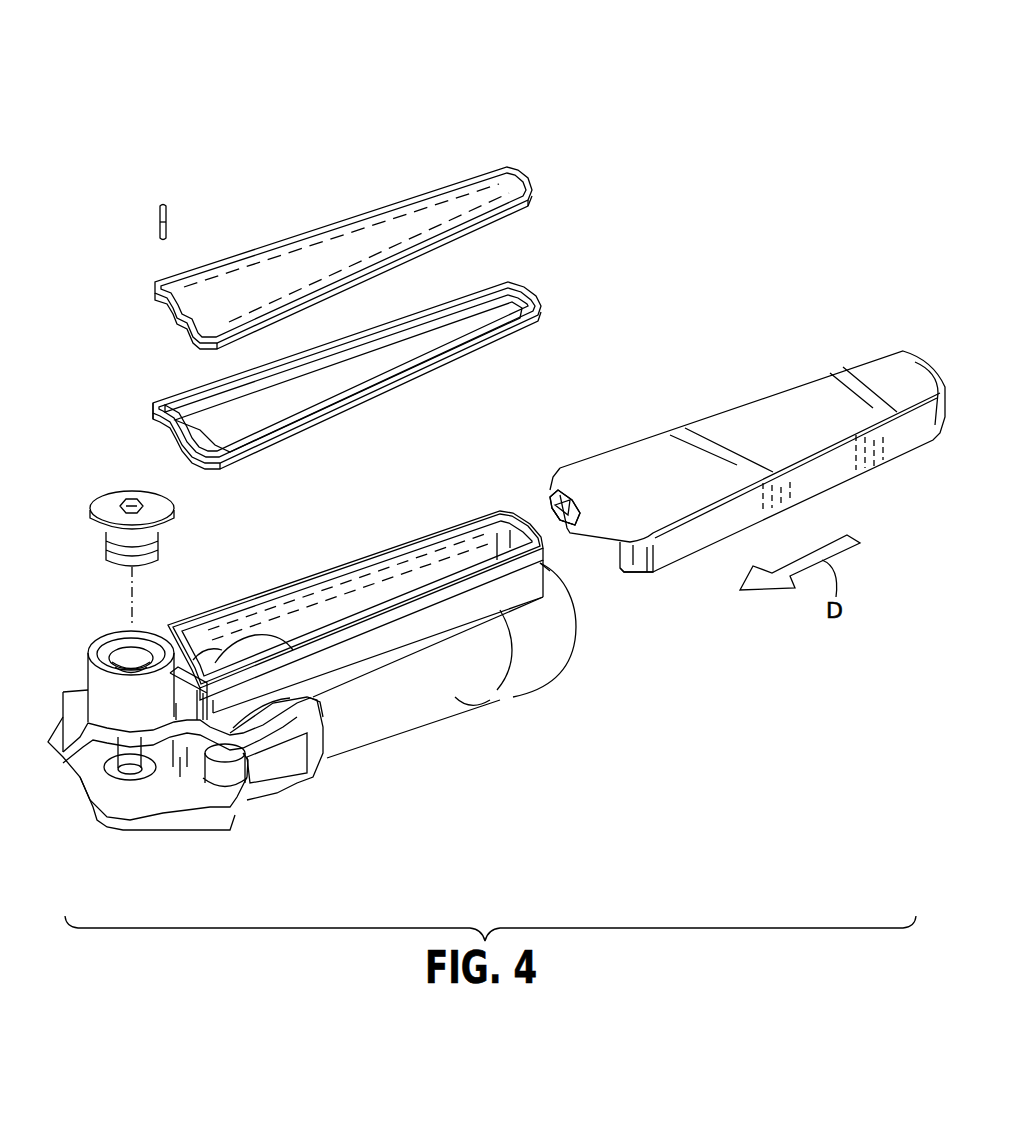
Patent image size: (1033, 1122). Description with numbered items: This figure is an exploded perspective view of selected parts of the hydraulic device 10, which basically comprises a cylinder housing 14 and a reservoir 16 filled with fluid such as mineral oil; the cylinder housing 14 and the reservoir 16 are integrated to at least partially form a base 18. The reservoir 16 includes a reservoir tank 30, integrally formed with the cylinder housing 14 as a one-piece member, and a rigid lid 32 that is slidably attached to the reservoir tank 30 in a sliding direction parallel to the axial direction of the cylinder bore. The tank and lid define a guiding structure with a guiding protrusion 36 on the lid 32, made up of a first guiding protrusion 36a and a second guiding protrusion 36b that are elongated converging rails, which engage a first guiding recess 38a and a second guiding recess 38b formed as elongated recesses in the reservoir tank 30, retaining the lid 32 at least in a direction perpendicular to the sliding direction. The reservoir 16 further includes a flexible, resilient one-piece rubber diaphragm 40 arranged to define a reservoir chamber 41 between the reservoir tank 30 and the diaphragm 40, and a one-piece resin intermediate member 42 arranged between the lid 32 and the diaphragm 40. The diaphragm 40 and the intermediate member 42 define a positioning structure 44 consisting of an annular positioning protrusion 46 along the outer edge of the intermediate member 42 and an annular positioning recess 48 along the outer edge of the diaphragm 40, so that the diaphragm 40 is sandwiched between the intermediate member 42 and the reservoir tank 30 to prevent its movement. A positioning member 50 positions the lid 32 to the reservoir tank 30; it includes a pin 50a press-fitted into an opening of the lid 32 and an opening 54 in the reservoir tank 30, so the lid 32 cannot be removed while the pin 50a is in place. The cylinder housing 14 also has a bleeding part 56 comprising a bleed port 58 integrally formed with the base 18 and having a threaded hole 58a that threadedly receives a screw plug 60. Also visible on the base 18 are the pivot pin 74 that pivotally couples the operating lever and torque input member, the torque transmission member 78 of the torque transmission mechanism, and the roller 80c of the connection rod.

The hydraulic device 10 is at (778, 128).
The cylinder housing 14 is at (416, 717).
The reservoir 16 is at (742, 537).
The base 18 is at (64, 750).
The reservoir tank 30 is at (550, 573).
The lid 32 is at (680, 560).
The guiding protrusion 36 is at (675, 376).
The first guiding protrusion 36a is at (633, 570).
The second guiding protrusion 36b is at (580, 498).
The first guiding recess 38a is at (340, 650).
The second guiding recess 38b is at (300, 582).
The diaphragm 40 is at (527, 286).
The reservoir chamber 41 is at (373, 599).
The intermediate member 42 is at (522, 170).
The positioning structure 44 is at (166, 363).
The positioning protrusion 46 is at (517, 212).
The positioning recess 48 is at (542, 302).
The positioning member 50 is at (134, 221).
The pin 50a is at (170, 220).
The opening 54 is at (190, 673).
The bleeding part 56 is at (118, 420).
The bleed port 58 is at (88, 673).
The threaded hole 58a is at (136, 655).
The screw plug 60 is at (109, 490).
The pivot pin 74 is at (130, 770).
The torque transmission member 78 is at (178, 760).
The roller 80c is at (225, 765).